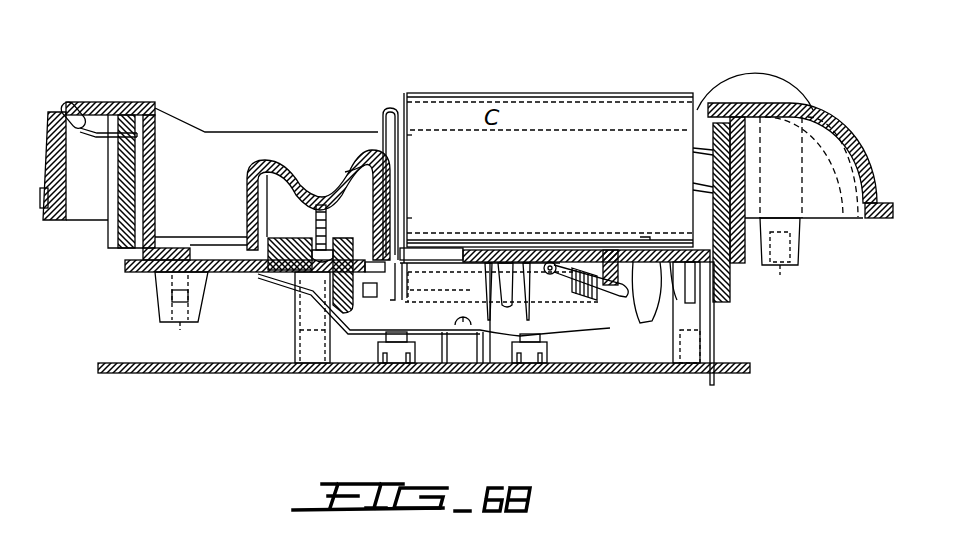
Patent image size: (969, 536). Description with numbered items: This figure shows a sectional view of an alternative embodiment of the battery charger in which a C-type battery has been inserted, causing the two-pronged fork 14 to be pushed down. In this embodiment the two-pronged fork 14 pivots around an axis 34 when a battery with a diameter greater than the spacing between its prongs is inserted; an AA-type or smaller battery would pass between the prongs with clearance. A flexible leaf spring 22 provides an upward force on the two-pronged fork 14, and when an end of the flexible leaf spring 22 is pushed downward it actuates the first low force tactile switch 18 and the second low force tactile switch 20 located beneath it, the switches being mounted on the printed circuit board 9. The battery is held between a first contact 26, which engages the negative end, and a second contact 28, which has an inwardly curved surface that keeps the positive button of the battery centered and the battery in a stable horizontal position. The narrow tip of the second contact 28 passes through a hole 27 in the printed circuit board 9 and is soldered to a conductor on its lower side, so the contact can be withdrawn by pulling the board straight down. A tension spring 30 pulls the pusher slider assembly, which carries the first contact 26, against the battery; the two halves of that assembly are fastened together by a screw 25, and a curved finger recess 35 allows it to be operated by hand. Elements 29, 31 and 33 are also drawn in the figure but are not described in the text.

The printed circuit board 9 is at (155, 373).
The two-pronged fork 14 is at (648, 237).
The first low force tactile switch 18 is at (532, 362).
The second low force tactile switch 20 is at (398, 362).
The flexible leaf spring 22 is at (342, 330).
The screw 25 is at (314, 196).
The first contact 26 is at (392, 108).
The hole 27 is at (717, 357).
The second contact 28 is at (727, 103).
The wall 29 is at (717, 320).
The tension spring 30 is at (410, 278).
The lower lip 31 is at (410, 218).
The upper lip 33 is at (407, 142).
The axis 34 is at (548, 262).
The curved finger recess 35 is at (343, 190).